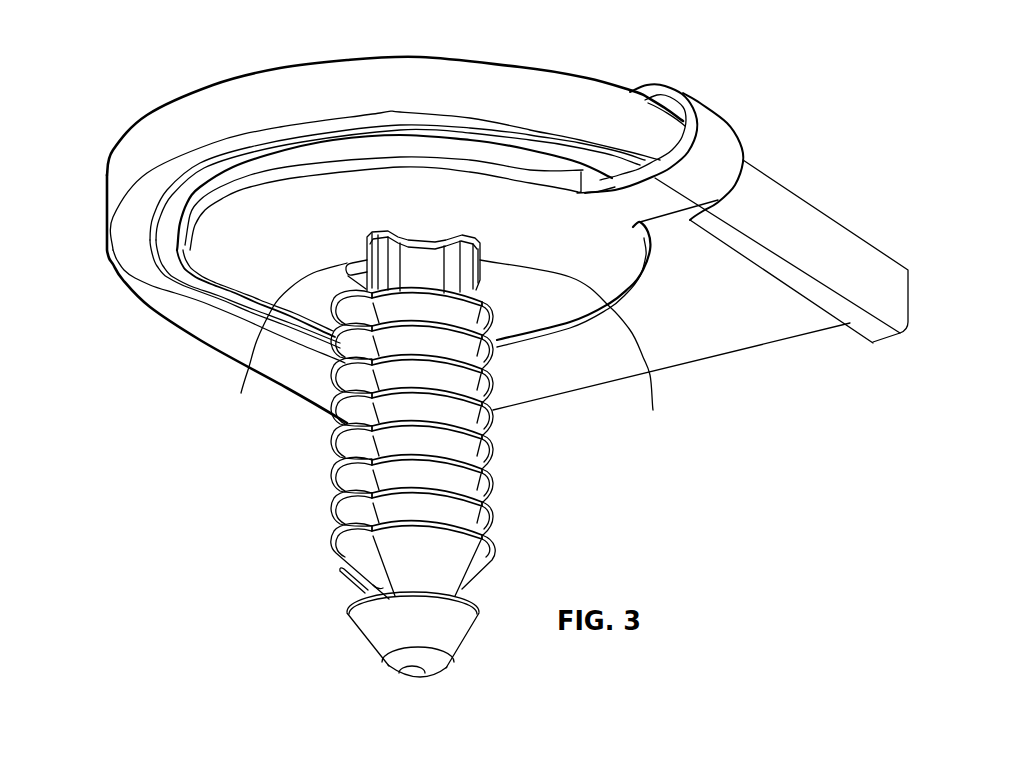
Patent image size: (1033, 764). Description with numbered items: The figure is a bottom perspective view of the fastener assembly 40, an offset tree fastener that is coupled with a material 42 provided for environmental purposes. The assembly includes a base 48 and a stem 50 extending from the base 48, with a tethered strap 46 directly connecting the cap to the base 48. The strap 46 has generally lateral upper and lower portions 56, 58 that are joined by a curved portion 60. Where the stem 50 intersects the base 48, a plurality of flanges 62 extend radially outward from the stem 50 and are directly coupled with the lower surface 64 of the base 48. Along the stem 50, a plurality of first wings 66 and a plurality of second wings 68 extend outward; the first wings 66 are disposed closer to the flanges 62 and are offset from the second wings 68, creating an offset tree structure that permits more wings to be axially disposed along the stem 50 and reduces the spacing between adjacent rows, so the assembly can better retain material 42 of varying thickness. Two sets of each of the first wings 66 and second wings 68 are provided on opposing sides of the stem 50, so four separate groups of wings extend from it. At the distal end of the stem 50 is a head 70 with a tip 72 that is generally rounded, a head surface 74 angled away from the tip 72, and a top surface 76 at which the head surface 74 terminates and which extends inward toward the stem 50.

The fastener assembly 40 is at (130, 75).
The material 42 is at (465, 61).
The tethered strap 46 is at (720, 138).
The base 48 is at (193, 272).
The stem 50 is at (497, 453).
The upper portion of strap 56 is at (647, 93).
The lower portion of strap 58 is at (644, 196).
The curved portion 60 is at (727, 170).
The flanges 62 is at (442, 353).
The lower surface of base 64 is at (254, 194).
The first wings 66 is at (333, 520).
The second wings 68 is at (490, 527).
The head 70 is at (380, 630).
The tip 72 is at (410, 673).
The head surface 74 is at (443, 650).
The top surface of head 76 is at (353, 602).